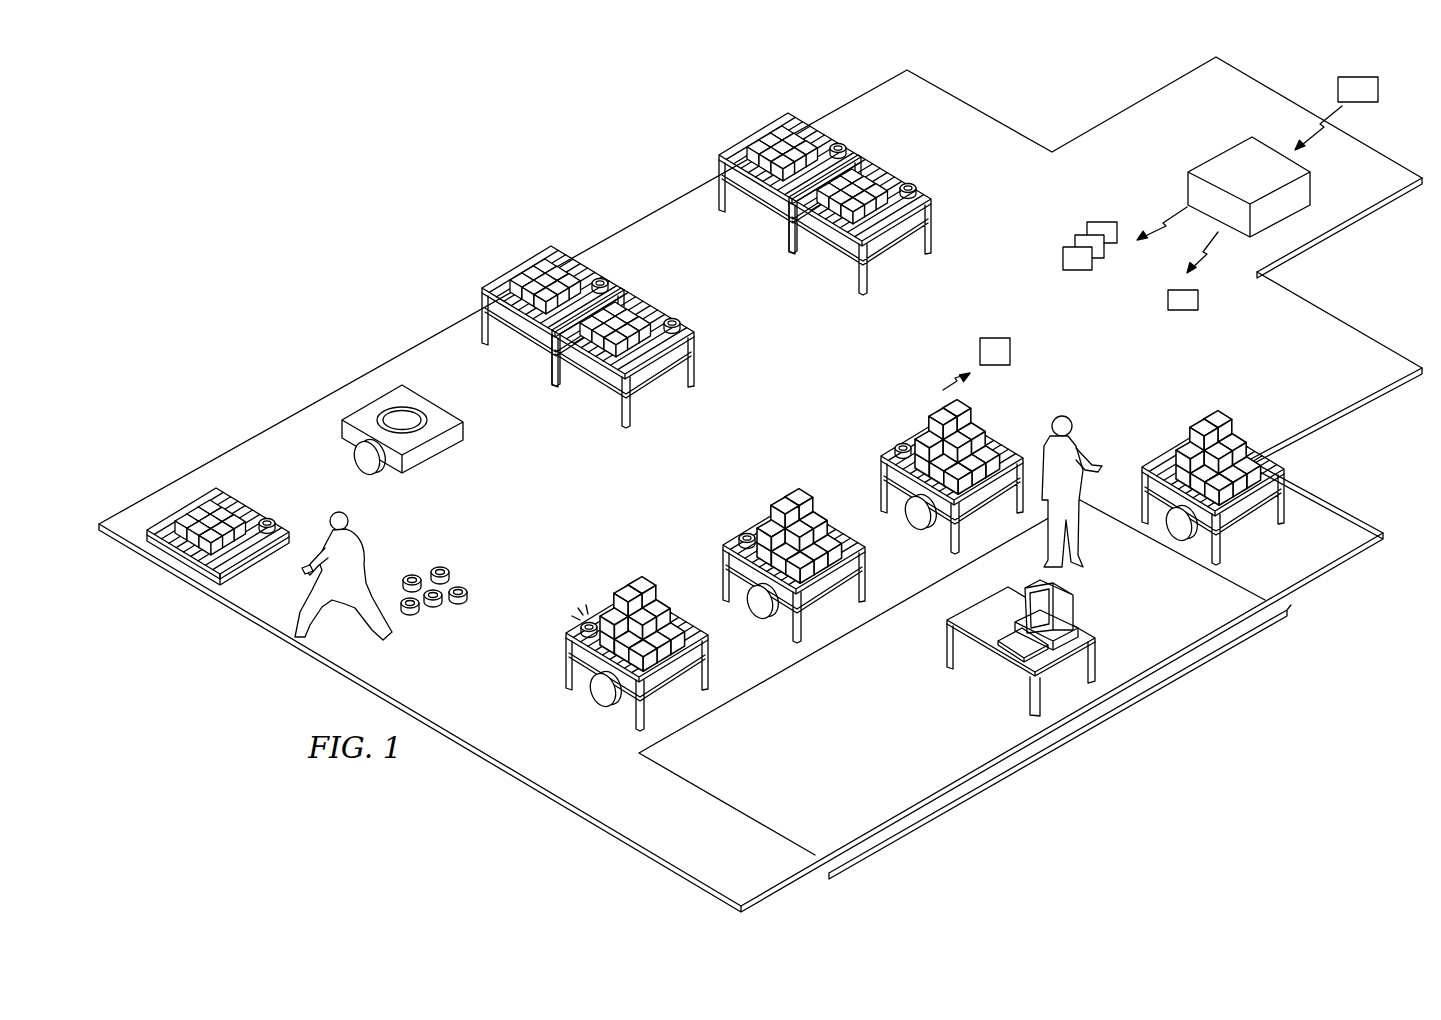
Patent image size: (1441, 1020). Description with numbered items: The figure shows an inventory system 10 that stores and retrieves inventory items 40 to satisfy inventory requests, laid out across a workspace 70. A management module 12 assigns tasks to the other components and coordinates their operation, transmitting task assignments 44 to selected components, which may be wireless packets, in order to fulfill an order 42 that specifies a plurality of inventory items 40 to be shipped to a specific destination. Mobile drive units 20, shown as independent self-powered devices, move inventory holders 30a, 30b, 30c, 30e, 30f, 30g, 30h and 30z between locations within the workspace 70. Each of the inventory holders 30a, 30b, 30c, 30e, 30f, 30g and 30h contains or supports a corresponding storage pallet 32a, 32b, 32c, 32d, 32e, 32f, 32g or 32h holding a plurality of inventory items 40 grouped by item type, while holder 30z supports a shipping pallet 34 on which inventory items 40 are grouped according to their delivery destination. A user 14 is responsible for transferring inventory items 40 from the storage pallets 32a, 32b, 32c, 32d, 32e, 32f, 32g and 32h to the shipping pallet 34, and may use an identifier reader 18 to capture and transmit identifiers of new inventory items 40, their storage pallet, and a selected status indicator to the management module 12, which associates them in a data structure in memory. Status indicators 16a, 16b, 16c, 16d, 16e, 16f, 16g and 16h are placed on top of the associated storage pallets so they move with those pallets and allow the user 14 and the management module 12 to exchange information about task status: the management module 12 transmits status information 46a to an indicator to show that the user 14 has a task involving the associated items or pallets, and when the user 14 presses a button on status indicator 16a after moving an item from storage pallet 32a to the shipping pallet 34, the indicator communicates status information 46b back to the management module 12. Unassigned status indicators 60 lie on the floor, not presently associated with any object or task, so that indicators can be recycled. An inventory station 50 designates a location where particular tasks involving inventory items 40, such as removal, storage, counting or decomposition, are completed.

The inventory system 10 is at (564, 132).
The management module 12 is at (1228, 160).
The user 14 is at (365, 552).
The status indicator 16a is at (588, 620).
The status indicator 16b is at (745, 530).
The status indicator 16c is at (902, 440).
The status indicator 16d is at (270, 513).
The status indicator 16e is at (674, 318).
The status indicator 16f is at (606, 279).
The status indicator 16g is at (912, 182).
The status indicator 16h is at (845, 142).
The identifier reader 18 is at (306, 572).
The mobile drive unit 20 is at (433, 448).
The inventory holder 30a is at (565, 672).
The inventory holder 30b is at (722, 580).
The inventory holder 30c is at (880, 490).
The inventory holder 30e is at (695, 375).
The inventory holder 30f is at (490, 340).
The inventory holder 30g is at (932, 235).
The inventory holder 30h is at (727, 205).
The inventory holder 30z is at (1288, 492).
The storage pallet 32a is at (567, 632).
The storage pallet 32b is at (723, 545).
The storage pallet 32c is at (880, 456).
The storage pallet 32d is at (237, 497).
The storage pallet 32e is at (697, 327).
The storage pallet 32f is at (563, 252).
The storage pallet 32g is at (935, 190).
The storage pallet 32h is at (813, 122).
The shipping pallet 34 is at (1262, 447).
The inventory items 40 is at (635, 590).
The order 42 is at (1380, 90).
The task assignment 44 is at (1077, 270).
The status information 46a is at (1200, 300).
The status information 46b is at (995, 338).
The inventory station 50 is at (1063, 740).
The unassigned status indicators 60 is at (471, 564).
The workspace 70 is at (1013, 117).